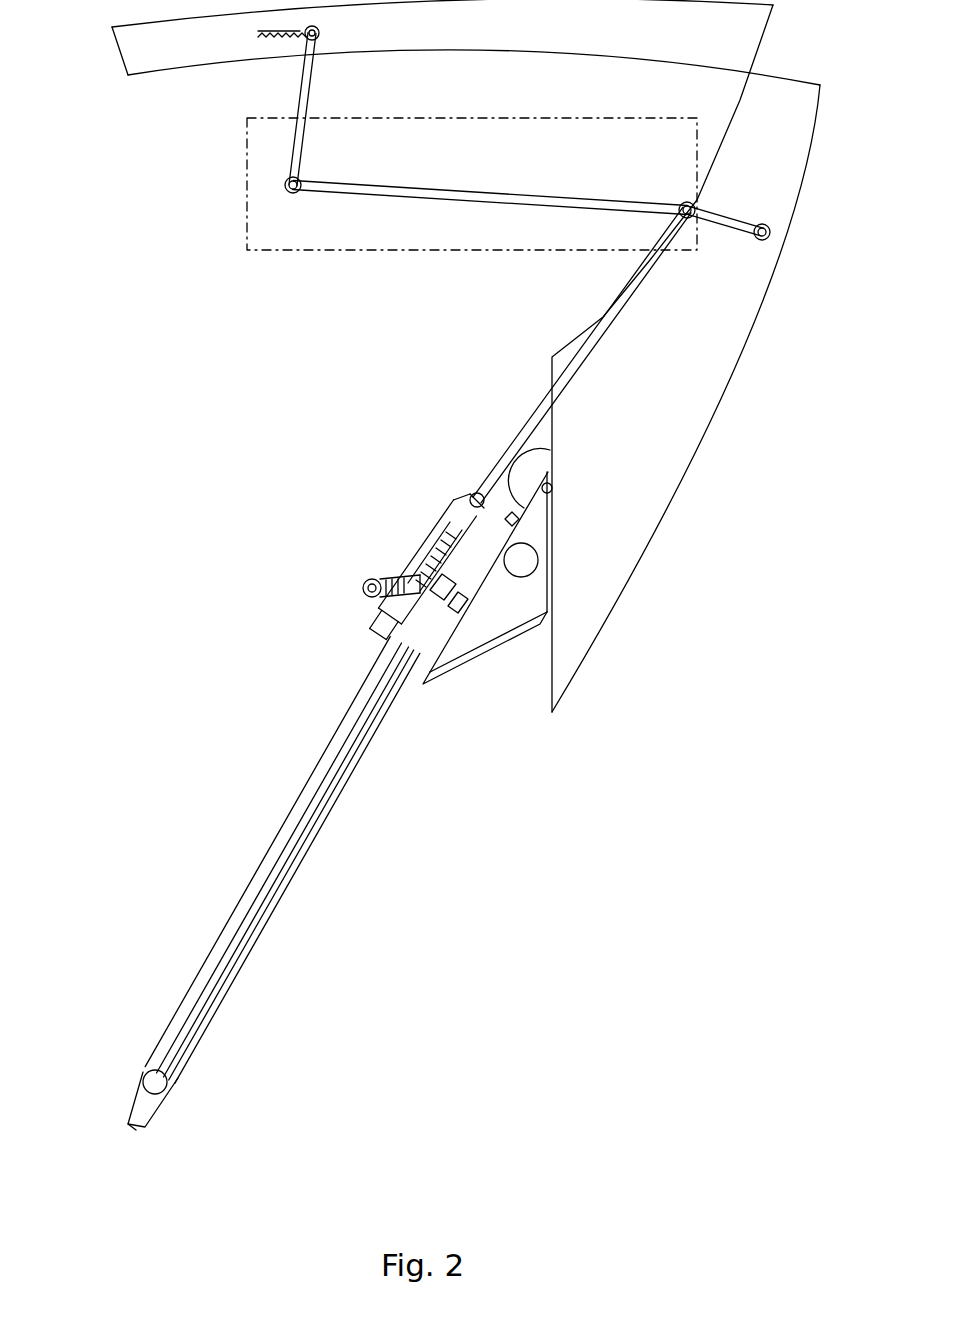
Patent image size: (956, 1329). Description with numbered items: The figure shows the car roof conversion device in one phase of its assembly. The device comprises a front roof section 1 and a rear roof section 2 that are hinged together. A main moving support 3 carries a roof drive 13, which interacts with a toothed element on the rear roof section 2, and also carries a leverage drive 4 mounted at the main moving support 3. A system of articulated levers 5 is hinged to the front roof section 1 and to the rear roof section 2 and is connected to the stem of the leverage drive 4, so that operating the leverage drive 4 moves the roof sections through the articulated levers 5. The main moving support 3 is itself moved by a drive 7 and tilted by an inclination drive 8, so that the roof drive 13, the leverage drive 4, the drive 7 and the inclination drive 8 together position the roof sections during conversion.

The front roof section 1 is at (188, 50).
The rear roof section 2 is at (632, 450).
The main moving support 3 is at (443, 672).
The leverage drive 4 is at (377, 628).
The system of articulated levers 5 is at (462, 118).
The drive of main moving support 7 is at (163, 1080).
The inclination drive 8 is at (363, 577).
The roof drive 13 is at (513, 632).